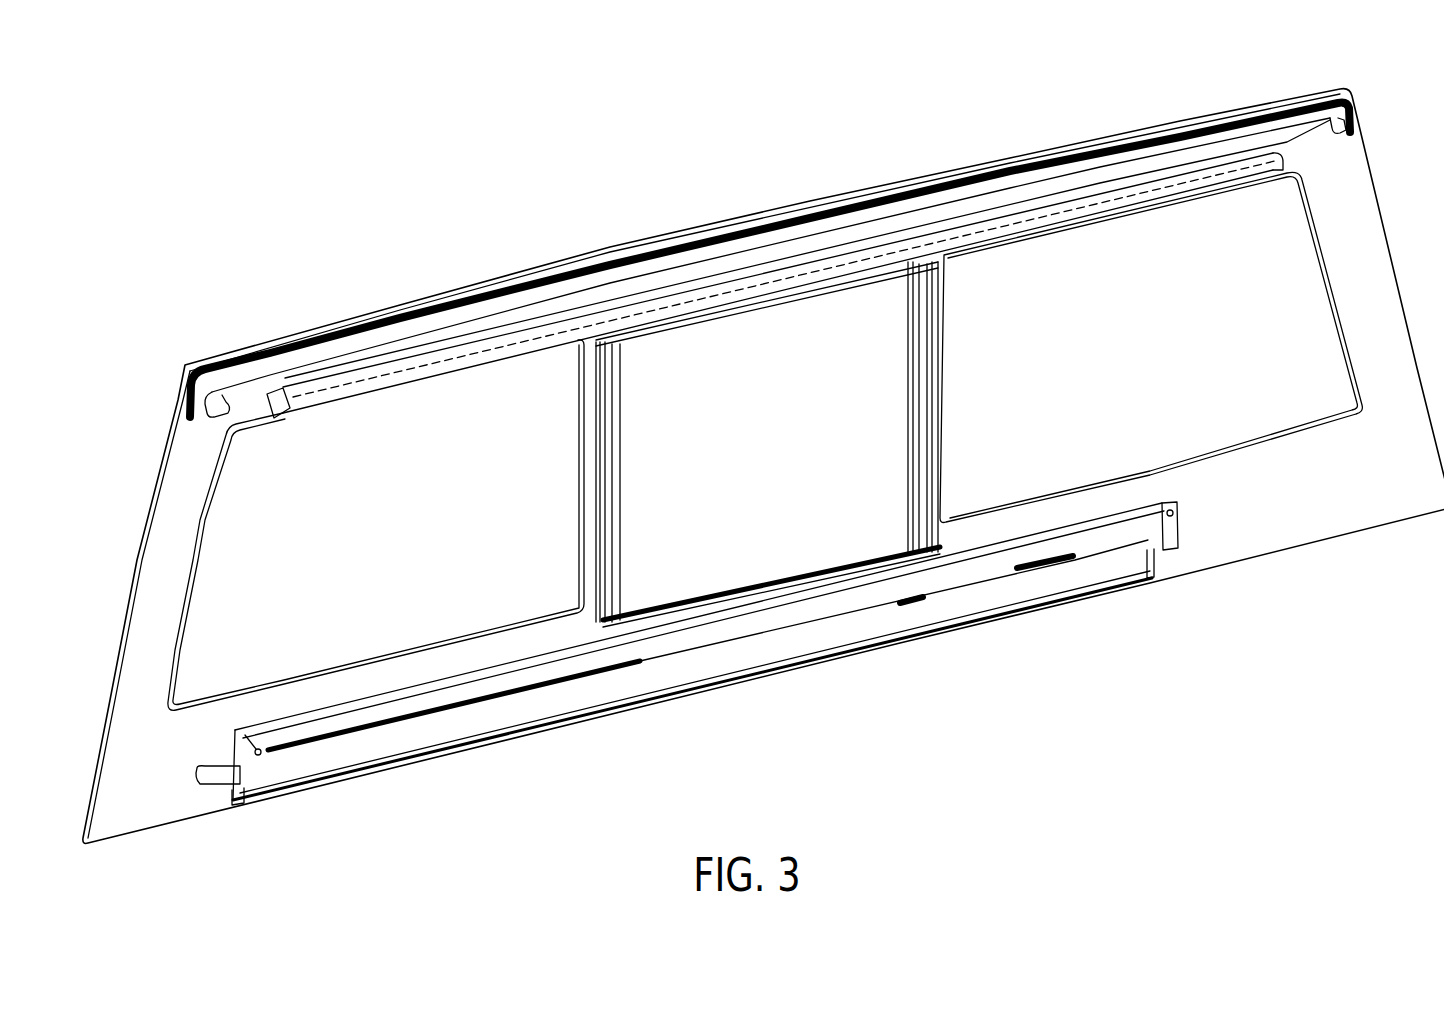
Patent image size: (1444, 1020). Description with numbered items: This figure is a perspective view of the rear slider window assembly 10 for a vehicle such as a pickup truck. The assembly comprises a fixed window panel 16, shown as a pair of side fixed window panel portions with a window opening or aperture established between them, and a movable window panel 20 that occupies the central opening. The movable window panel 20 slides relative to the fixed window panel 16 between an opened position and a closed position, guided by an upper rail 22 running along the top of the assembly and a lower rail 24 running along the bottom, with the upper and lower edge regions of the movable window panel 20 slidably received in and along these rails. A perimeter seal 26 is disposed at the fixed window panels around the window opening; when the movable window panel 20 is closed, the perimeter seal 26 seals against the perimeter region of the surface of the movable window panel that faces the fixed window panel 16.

The rear slider window assembly 10 is at (528, 215).
The fixed window panel 16 is at (415, 468).
The movable window panel 20 is at (718, 395).
The upper rail 22 is at (855, 247).
The lower rail 24 is at (885, 618).
The perimeter seal 26 is at (935, 379).